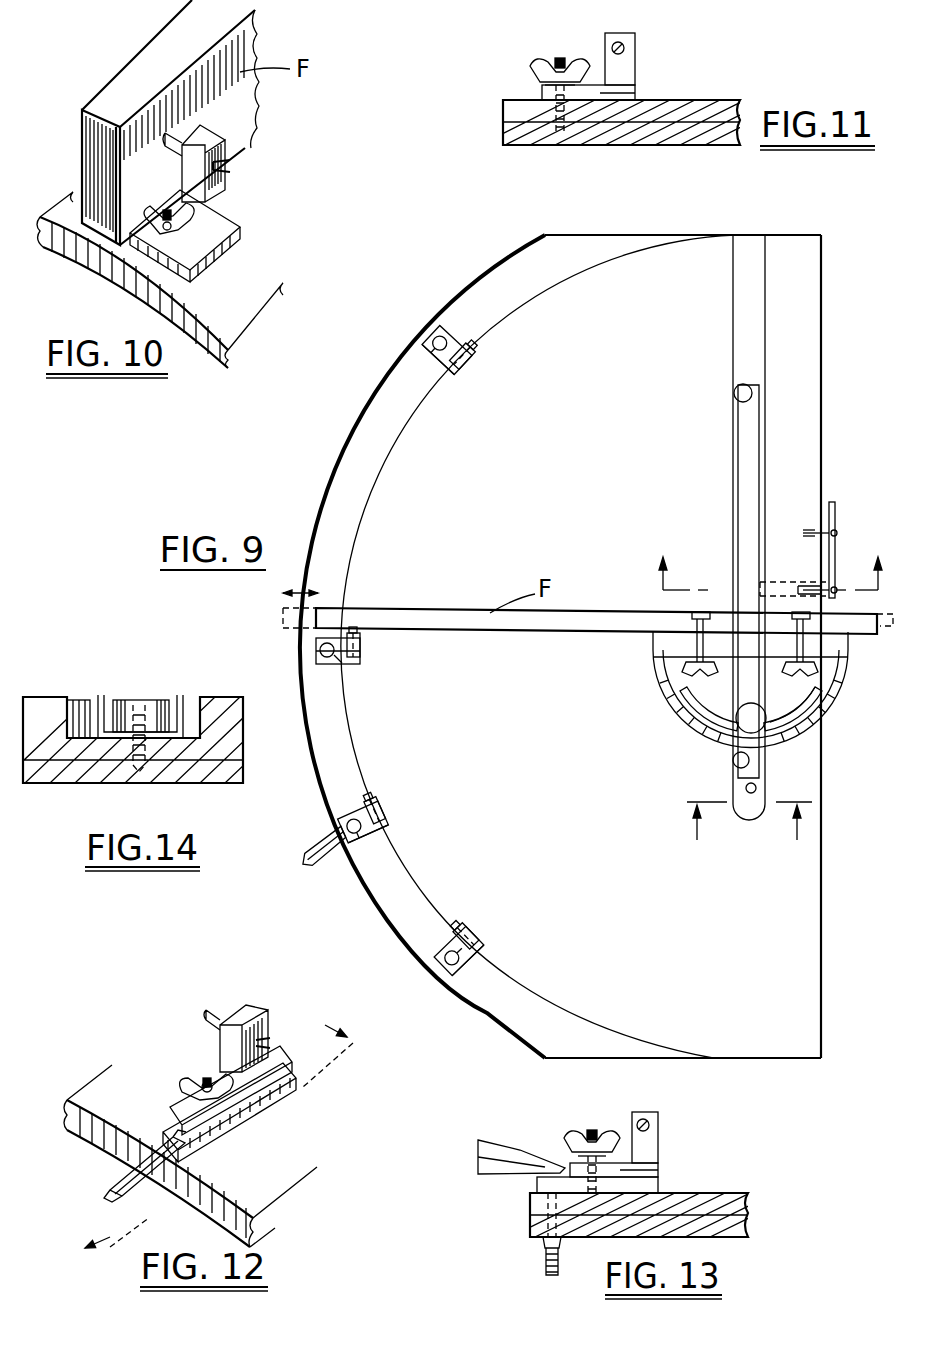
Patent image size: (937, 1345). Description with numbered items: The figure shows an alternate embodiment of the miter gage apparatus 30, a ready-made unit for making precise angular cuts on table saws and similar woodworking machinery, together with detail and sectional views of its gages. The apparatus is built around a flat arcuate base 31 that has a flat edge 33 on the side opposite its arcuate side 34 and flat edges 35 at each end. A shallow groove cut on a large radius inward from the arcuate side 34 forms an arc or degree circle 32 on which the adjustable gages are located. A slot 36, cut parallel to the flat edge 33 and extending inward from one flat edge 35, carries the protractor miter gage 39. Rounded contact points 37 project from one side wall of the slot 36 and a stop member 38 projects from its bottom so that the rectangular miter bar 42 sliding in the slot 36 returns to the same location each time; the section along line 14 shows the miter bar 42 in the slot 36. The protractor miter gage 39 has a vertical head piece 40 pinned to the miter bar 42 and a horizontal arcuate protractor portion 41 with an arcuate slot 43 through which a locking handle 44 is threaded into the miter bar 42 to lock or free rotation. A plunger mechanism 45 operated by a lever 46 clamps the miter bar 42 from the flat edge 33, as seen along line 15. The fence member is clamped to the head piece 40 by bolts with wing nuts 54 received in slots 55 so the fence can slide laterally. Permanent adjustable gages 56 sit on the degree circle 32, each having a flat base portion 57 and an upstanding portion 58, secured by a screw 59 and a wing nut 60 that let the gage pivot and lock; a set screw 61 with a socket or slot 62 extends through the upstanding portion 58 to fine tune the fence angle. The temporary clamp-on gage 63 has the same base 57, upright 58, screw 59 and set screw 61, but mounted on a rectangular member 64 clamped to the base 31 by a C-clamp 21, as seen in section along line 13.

In FIG. 12, the section line 13— 13 is at (197, 1127).
In FIG. 9, the section line 14— 14 is at (747, 835).
In FIG. 9, the section line 15— 15 is at (771, 559).
In FIG. 9, the C-clamp 21 is at (306, 850).
In FIG. 12, the C-clamp 21 is at (120, 1173).
In FIG. 13, the C-clamp 21 is at (512, 1147).
In FIG. 9, the miter gage apparatus 30 is at (462, 275).
In FIG. 9, the base 31 is at (584, 478).
In FIG. 10, the base 31 is at (243, 330).
In FIG. 11, the base 31 is at (635, 140).
In FIG. 14, the base 31 is at (106, 776).
In FIG. 12, the base 31 is at (290, 1200).
In FIG. 13, the base 31 is at (710, 1194).
In FIG. 9, the arc or degree circle 32 is at (389, 464).
In FIG. 9, the flat edge 33 is at (823, 308).
In FIG. 9, the arcuate side 34 is at (338, 456).
In FIG. 9, the flat edges 35 is at (592, 235).
In FIG. 9, the slot 36 is at (733, 325).
In FIG. 14, the slot 36 is at (196, 697).
In FIG. 9, the contact points 37 is at (735, 388).
In FIG. 14, the contact points 37 is at (78, 700).
In FIG. 9, the stop member 38 is at (751, 793).
In FIG. 14, the stop member 38 is at (160, 705).
In FIG. 9, the protractor miter gage 39 is at (660, 707).
In FIG. 9, the head piece 40 is at (850, 648).
In FIG. 9, the arcuate protractor portion 41 is at (812, 736).
In FIG. 9, the miter bar 42 is at (752, 440).
In FIG. 14, the miter bar 42 is at (117, 695).
In FIG. 9, the arcuate slot 43 is at (800, 695).
In FIG. 9, the locking handle 44 is at (758, 716).
In FIG. 9, the plunger mechanism 45 is at (850, 532).
In FIG. 9, the lever 46 is at (833, 505).
In FIG. 9, the wing nuts 54 is at (684, 668).
In FIG. 9, the slots 55 is at (690, 618).
In FIG. 9, the adjustable gage 56 is at (361, 655).
In FIG. 10, the adjustable gage 56 is at (242, 200).
In FIG. 11, the adjustable gage 56 is at (637, 66).
In FIG. 9, the flat base portion 57 is at (350, 665).
In FIG. 10, the flat base portion 57 is at (243, 225).
In FIG. 11, the flat base portion 57 is at (637, 93).
In FIG. 12, the flat base portion 57 is at (262, 1068).
In FIG. 13, the flat base portion 57 is at (648, 1170).
In FIG. 9, the upstanding portion 58 is at (362, 640).
In FIG. 10, the upstanding portion 58 is at (207, 140).
In FIG. 11, the upstanding portion 58 is at (637, 45).
In FIG. 12, the upstanding portion 58 is at (240, 1012).
In FIG. 13, the upstanding portion 58 is at (660, 1133).
In FIG. 10, the screw 59 is at (198, 226).
In FIG. 11, the screw 59 is at (552, 138).
In FIG. 12, the screw 59 is at (204, 1082).
In FIG. 13, the screw 59 is at (590, 1130).
In FIG. 9, the wing nut 60 is at (331, 659).
In FIG. 10, the wing nut 60 is at (160, 210).
In FIG. 11, the wing nut 60 is at (540, 62).
In FIG. 12, the wing nut 60 is at (185, 1092).
In FIG. 13, the wing nut 60 is at (574, 1138).
In FIG. 9, the set screw 61 is at (357, 626).
In FIG. 10, the set screw 61 is at (225, 160).
In FIG. 11, the set screw 61 is at (618, 40).
In FIG. 12, the set screw 61 is at (208, 1010).
In FIG. 13, the set screw 61 is at (645, 1118).
In FIG. 10, the allen wrench socket or screw driver slot 62 is at (232, 172).
In FIG. 9, the clamp-on gage 63 is at (388, 820).
In FIG. 12, the clamp-on gage 63 is at (175, 1030).
In FIG. 13, the clamp-on gage 63 is at (725, 1142).
In FIG. 12, the rectangular member 64 is at (255, 1116).
In FIG. 13, the rectangular member 64 is at (540, 1185).